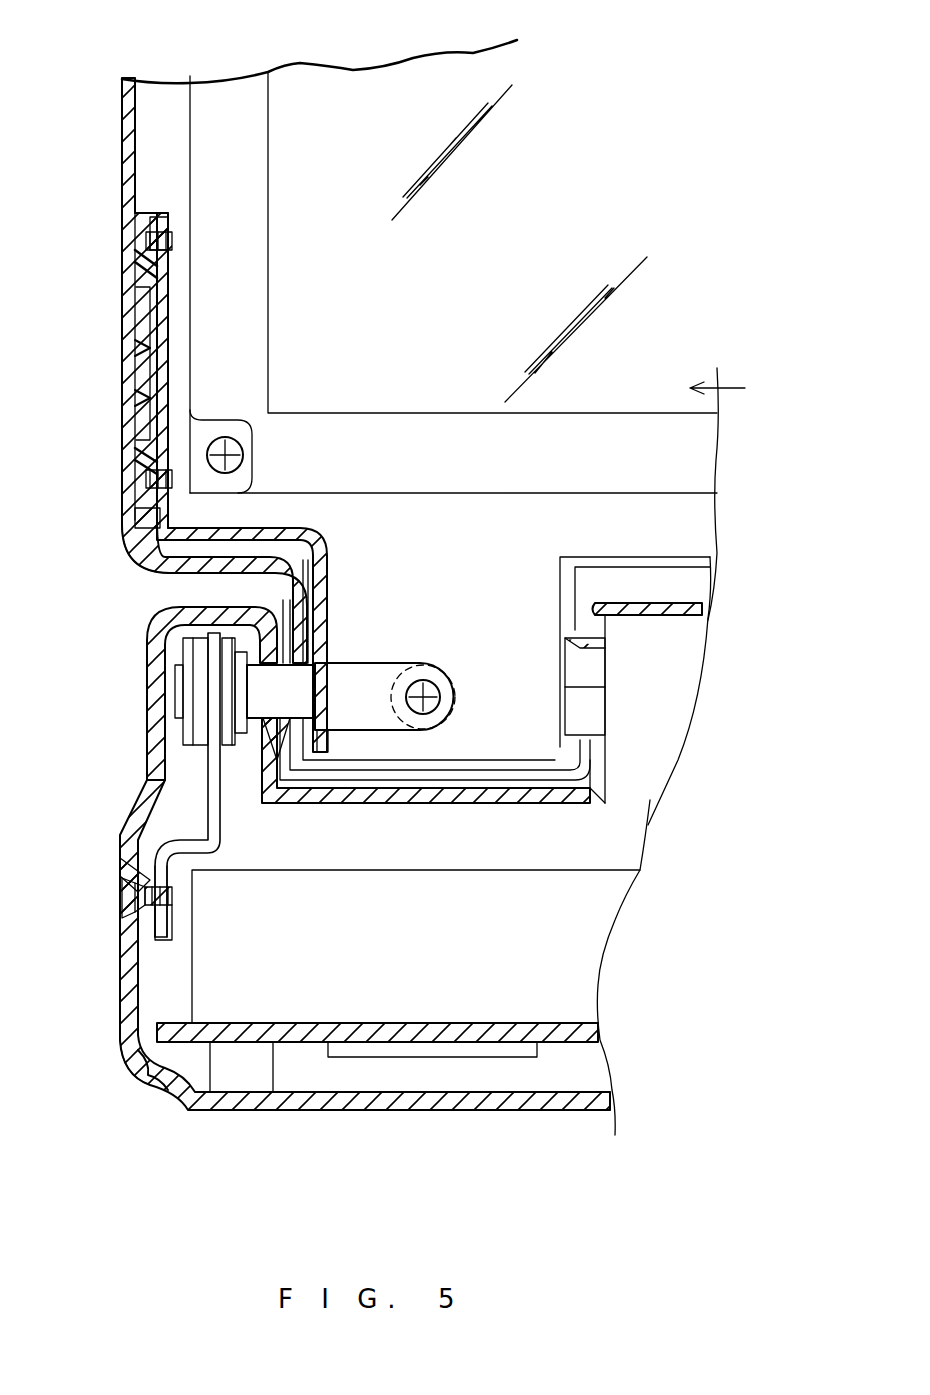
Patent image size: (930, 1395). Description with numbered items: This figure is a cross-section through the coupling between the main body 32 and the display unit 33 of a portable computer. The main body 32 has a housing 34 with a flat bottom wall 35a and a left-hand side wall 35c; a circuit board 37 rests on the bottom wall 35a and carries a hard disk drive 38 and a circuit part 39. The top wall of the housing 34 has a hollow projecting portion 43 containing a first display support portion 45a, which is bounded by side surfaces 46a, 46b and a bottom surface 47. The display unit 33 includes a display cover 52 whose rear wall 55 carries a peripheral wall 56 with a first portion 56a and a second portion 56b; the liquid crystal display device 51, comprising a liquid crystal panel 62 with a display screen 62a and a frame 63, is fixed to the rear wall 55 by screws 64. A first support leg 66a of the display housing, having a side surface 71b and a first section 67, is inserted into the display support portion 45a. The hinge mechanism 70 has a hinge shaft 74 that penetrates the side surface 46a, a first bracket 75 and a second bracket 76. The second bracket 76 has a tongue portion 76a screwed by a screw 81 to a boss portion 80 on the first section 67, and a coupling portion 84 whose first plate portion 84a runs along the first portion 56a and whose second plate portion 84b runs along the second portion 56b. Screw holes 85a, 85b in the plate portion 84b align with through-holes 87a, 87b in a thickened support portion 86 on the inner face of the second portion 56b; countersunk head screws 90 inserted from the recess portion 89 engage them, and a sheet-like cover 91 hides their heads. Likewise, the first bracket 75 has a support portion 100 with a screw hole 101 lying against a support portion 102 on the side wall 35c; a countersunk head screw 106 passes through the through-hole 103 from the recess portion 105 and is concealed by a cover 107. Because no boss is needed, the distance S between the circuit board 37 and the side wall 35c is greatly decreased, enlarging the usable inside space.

The main body 32 is at (140, 1095).
The display unit 33 is at (232, 88).
The housing 34 is at (120, 822).
The bottom wall 35a is at (375, 1112).
The side wall 35c is at (125, 1020).
The circuit board 37 is at (580, 1025).
The hard disk drive 38 is at (600, 925).
The circuit part 39 is at (498, 1058).
The projecting portion 43 is at (152, 665).
The first display support portion 45a is at (570, 800).
The side surface 46a is at (300, 637).
The side surface 46b is at (595, 755).
The bottom surface 47 is at (370, 805).
The liquid crystal display device 51 is at (736, 384).
The display cover 52 is at (160, 95).
The rear wall 55 is at (190, 290).
The peripheral wall 56 is at (128, 280).
The first portion 56a is at (205, 572).
The second portion 56b is at (122, 122).
The liquid crystal panel 62 is at (442, 75).
The display screen 62a is at (519, 243).
The frame 63 is at (698, 460).
The screw 64 is at (243, 455).
The first support leg 66a is at (610, 782).
The first section 67 is at (520, 790).
The hinge mechanism 70 is at (183, 690).
The side surface 71b is at (598, 625).
The hinge shaft 74 is at (305, 695).
The first bracket 75 is at (222, 820).
The second bracket 76 is at (330, 648).
The tongue portion 76a is at (375, 730).
The boss portion 80 is at (445, 735).
The screw 81 is at (440, 695).
The coupling portion 84 is at (327, 555).
The first plate portion 84a is at (247, 530).
The second plate portion 84b is at (168, 335).
The screw hole 85a is at (168, 232).
The screw hole 85b is at (138, 520).
The support portion 86 is at (142, 345).
The through-hole 87a is at (128, 258).
The through-hole 87b is at (150, 462).
The recess portion 89 is at (140, 392).
The countersunk head screw 90 is at (150, 240).
The cover 91 is at (150, 308).
The support portion 100 is at (170, 880).
The screw hole 101 is at (172, 935).
The support portion 102 is at (157, 908).
The through-hole 103 is at (122, 868).
The recess portion 105 is at (128, 908).
The countersunk head screw 106 is at (175, 905).
The cover 107 is at (120, 896).
The distance S is at (130, 1062).